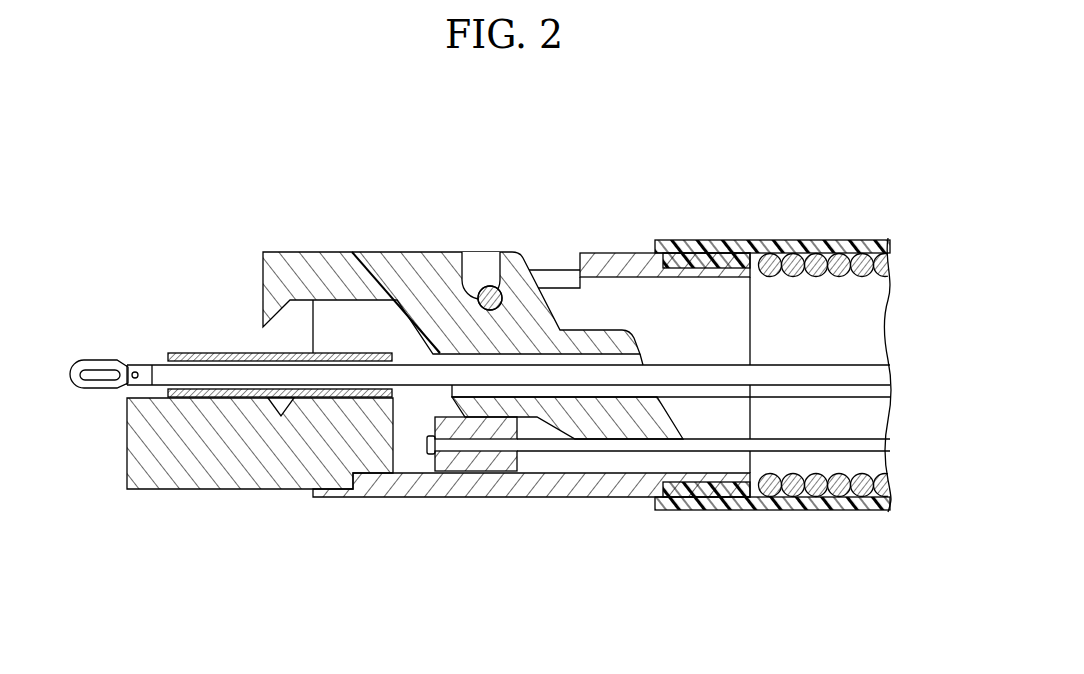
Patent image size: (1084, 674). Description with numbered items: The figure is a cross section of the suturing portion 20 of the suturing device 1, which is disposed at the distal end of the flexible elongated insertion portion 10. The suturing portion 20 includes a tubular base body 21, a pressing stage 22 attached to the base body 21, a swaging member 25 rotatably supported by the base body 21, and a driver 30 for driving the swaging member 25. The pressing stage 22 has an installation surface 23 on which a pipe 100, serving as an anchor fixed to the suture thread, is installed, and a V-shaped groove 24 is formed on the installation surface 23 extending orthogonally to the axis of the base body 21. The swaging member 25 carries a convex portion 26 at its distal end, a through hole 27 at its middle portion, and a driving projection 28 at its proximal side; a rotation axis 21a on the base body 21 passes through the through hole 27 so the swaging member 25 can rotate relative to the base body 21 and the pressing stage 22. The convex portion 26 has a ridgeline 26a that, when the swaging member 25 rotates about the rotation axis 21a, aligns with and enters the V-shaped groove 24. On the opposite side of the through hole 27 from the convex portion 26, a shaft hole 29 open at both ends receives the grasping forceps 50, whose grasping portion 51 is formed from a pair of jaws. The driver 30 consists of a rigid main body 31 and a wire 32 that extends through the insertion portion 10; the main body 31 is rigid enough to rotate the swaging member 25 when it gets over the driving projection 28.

The suturing device 1 is at (544, 208).
The insertion portion 10 is at (846, 226).
The suturing portion 20 is at (319, 243).
The base body 21 is at (530, 492).
The rotation axis 21a is at (462, 270).
The pressing stage 22 is at (184, 490).
The installation surface 23 is at (142, 389).
The V-shaped groove 24 is at (292, 418).
The swaging member 25 is at (417, 263).
The convex portion 26 is at (288, 290).
The ridgeline 26a is at (262, 328).
The through hole 27 is at (494, 286).
The driving projection 28 is at (592, 433).
The shaft hole 29 is at (602, 397).
The driver 30 is at (418, 460).
The main body 31 is at (458, 466).
The wire 32 is at (848, 438).
The grasping forceps 50 is at (135, 346).
The grasping portion 51 is at (84, 361).
The pipe 100 is at (202, 353).